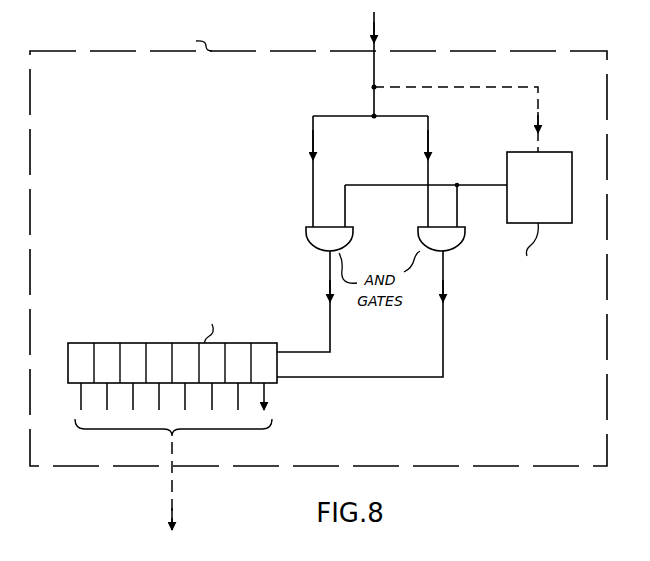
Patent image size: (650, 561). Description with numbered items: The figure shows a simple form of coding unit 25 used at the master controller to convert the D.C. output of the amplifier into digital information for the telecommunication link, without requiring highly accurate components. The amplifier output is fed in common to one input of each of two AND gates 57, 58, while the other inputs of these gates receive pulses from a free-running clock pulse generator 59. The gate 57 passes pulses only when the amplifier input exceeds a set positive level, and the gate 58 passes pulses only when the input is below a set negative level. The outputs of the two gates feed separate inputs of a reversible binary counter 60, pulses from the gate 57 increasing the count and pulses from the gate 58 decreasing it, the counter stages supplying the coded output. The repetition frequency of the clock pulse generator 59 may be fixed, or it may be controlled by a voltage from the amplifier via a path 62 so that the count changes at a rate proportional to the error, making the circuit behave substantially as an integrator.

The coding unit 25 is at (513, 468).
The AND gate 57 is at (467, 261).
The AND gate 58 is at (372, 261).
The clock pulse generator 59 is at (550, 197).
The reversible binary counter 60 is at (114, 338).
The path 62 is at (470, 89).